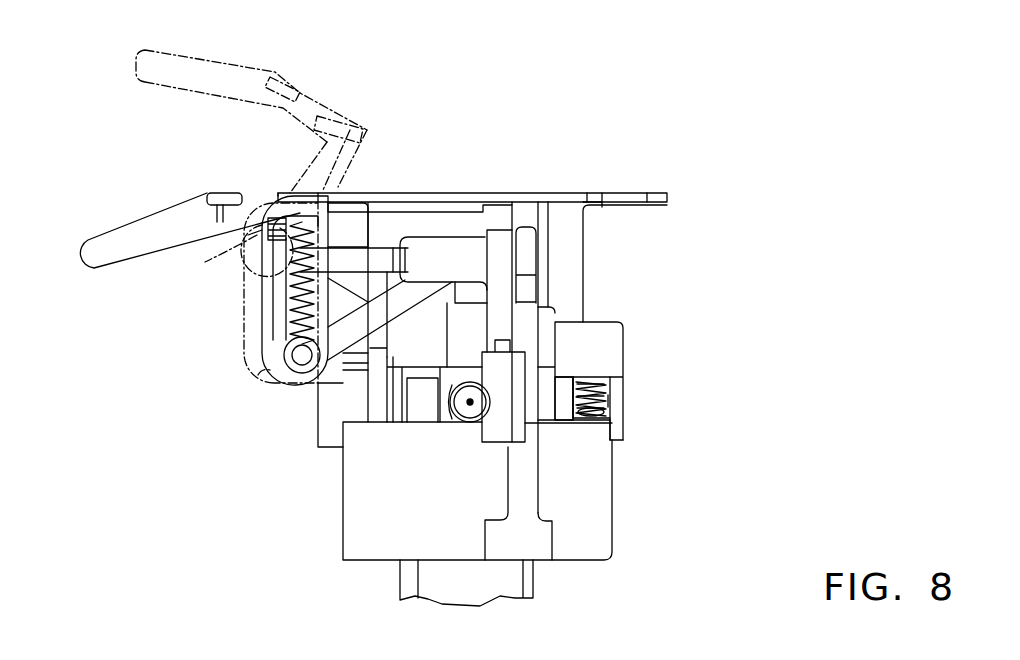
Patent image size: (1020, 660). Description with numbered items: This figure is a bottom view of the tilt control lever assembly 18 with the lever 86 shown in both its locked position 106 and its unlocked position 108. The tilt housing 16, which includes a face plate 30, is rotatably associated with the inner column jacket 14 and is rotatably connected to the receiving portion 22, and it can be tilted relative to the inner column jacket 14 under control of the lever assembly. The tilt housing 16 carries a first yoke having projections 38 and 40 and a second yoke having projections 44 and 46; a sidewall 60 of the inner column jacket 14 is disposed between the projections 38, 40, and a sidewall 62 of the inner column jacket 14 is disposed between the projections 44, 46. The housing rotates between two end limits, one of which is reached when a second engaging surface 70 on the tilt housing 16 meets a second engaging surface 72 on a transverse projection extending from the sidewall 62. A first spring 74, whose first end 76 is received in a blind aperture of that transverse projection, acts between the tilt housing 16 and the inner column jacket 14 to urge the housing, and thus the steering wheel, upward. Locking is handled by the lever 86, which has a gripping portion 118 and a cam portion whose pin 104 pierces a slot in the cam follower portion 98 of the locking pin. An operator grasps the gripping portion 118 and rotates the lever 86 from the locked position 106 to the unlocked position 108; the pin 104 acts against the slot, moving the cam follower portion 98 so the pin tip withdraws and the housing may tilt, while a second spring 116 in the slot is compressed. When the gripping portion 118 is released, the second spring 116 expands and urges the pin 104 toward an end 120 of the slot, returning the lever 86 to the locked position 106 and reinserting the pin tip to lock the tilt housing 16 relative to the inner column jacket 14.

The inner column jacket 14 is at (330, 603).
The tilt housing 16 is at (619, 170).
The tilt control lever assembly 18 is at (106, 104).
The receiving portion 22 is at (330, 542).
The face plate 30 is at (638, 206).
The projection 38 is at (331, 443).
The projection 40 is at (373, 413).
The projection 44 is at (620, 431).
The projection 46 is at (574, 392).
The sidewall 60 is at (352, 399).
The sidewall 62 is at (612, 406).
The second engaging surface 70 is at (612, 381).
The second engaging surface 72 is at (598, 396).
The first spring 74 is at (604, 391).
The first end 76 is at (590, 412).
The lever 86 is at (217, 189).
The cam follower portion 98 is at (263, 311).
The pin 104 is at (290, 350).
The locked position 106 is at (103, 214).
The unlocked position 108 is at (142, 40).
The second spring 116 is at (257, 235).
The gripping portion 118 is at (178, 207).
The end 120 is at (258, 365).